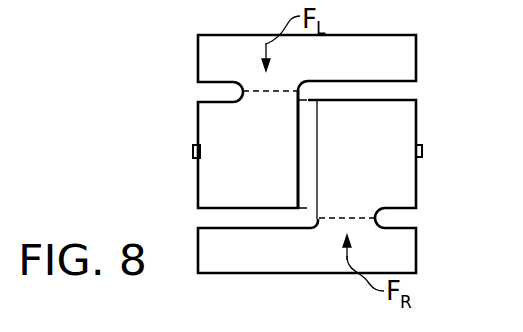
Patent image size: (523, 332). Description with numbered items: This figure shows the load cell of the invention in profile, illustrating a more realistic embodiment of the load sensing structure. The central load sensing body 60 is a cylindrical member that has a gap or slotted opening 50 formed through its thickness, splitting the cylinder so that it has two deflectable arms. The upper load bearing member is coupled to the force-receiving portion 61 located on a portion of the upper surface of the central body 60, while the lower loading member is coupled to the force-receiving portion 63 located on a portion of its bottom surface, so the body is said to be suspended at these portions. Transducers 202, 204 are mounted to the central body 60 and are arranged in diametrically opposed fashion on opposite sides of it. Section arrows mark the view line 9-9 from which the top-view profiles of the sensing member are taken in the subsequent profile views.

The view line 9 is at (185, 152).
The slotted opening 50 is at (306, 143).
The central load sensing body 60 is at (416, 116).
The force-receiving portion 61 is at (278, 92).
The force-receiving portion 63 is at (343, 212).
The transducer 202 is at (194, 143).
The transducer 204 is at (418, 140).